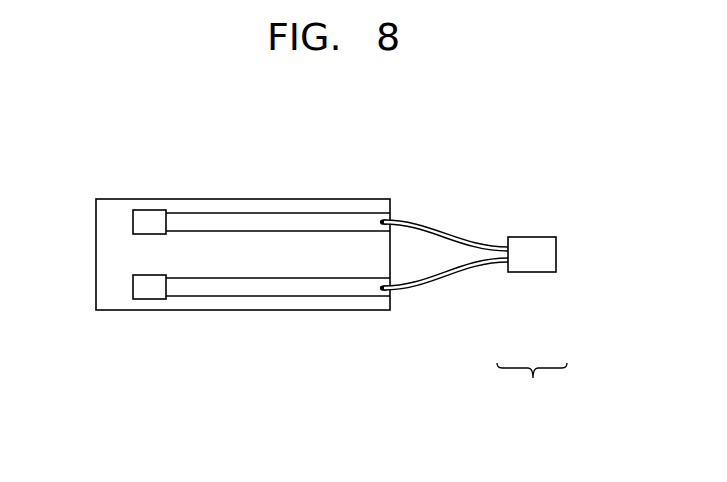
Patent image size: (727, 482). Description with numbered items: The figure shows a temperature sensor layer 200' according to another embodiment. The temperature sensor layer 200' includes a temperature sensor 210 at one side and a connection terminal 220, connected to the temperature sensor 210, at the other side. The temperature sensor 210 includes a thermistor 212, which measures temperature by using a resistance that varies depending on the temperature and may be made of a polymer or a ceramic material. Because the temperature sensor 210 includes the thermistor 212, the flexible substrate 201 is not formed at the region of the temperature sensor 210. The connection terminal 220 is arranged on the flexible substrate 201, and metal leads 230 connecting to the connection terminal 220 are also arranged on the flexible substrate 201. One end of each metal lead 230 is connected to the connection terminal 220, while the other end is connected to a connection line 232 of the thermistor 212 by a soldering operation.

The temperature sensor layer 200' is at (610, 159).
The flexible substrate 201 is at (110, 292).
The temperature sensor 210 is at (533, 400).
The thermistor 212 is at (530, 272).
The connection terminal 220 is at (137, 222).
The metal leads 230 is at (303, 222).
The connection line 232 is at (448, 275).